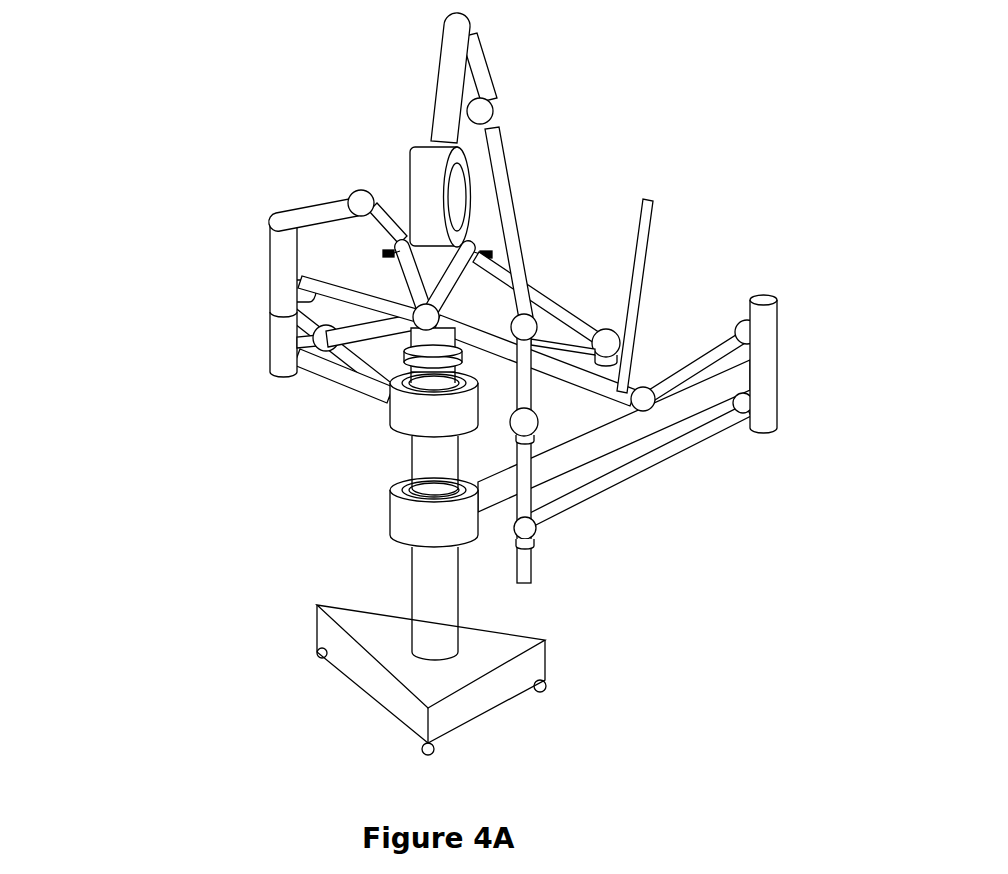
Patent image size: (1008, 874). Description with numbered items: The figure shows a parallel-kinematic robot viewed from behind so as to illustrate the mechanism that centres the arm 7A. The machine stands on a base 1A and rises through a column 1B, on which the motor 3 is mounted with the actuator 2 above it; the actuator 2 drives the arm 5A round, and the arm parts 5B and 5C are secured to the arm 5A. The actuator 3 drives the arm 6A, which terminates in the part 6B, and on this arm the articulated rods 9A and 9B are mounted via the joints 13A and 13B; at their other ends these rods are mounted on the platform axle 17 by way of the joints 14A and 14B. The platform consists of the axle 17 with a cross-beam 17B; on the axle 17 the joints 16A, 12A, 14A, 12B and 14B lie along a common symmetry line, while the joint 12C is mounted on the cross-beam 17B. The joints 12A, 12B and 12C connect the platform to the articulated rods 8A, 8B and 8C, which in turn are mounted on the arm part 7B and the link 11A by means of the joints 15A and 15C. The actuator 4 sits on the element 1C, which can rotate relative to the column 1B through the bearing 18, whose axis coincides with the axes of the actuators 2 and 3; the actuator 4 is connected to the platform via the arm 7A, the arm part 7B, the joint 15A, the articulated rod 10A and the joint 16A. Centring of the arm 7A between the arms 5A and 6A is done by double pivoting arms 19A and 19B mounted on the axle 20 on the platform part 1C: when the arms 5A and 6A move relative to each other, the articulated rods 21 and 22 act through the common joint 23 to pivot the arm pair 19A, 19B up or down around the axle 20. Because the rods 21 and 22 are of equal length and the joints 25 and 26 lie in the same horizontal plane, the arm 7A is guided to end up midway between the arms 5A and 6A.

The base 1A is at (350, 650).
The column 1B is at (420, 457).
The element 1C is at (455, 318).
The actuator 2 is at (427, 423).
The actuator 3 is at (410, 528).
The actuator 4 is at (425, 173).
The arm 5A is at (295, 378).
The arm part 5B is at (270, 217).
The arm part 5C is at (317, 210).
The arm 6A is at (684, 412).
The end post 6B is at (773, 408).
The arm 7A is at (446, 104).
The arm part 7B is at (483, 80).
The articulated rod 8A is at (317, 303).
The articulated rod 8B is at (395, 393).
The articulated rod 8C is at (405, 208).
The articulated rod 9A is at (688, 355).
The articulated rod 9B is at (620, 482).
The articulated rod 10A is at (513, 230).
The link bar 11A is at (300, 284).
The joint 12A is at (526, 423).
The joint 12B is at (535, 503).
The joint 12C is at (606, 330).
The joint 13A is at (747, 320).
The joint 13B is at (745, 410).
The joint 14A is at (537, 498).
The joint 14B is at (520, 532).
The joint 15A is at (492, 112).
The joint 15C is at (357, 193).
The joint 16A is at (528, 318).
The axle 17 is at (534, 565).
The cross-beam 17B is at (568, 352).
The bearing 18 is at (390, 383).
The pivoting arm 19A is at (442, 287).
The pivoting arm 19B is at (405, 268).
The axle 20 is at (383, 253).
The articulated rod 21 is at (650, 200).
The articulated rod 22 is at (314, 338).
The common joint 23 is at (413, 318).
The joint 25 is at (646, 387).
The joint 26 is at (308, 346).